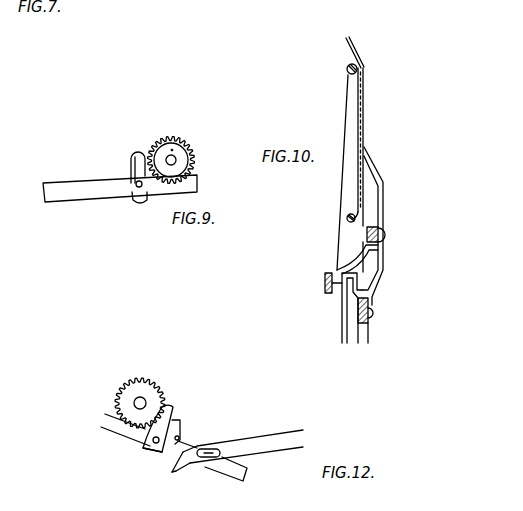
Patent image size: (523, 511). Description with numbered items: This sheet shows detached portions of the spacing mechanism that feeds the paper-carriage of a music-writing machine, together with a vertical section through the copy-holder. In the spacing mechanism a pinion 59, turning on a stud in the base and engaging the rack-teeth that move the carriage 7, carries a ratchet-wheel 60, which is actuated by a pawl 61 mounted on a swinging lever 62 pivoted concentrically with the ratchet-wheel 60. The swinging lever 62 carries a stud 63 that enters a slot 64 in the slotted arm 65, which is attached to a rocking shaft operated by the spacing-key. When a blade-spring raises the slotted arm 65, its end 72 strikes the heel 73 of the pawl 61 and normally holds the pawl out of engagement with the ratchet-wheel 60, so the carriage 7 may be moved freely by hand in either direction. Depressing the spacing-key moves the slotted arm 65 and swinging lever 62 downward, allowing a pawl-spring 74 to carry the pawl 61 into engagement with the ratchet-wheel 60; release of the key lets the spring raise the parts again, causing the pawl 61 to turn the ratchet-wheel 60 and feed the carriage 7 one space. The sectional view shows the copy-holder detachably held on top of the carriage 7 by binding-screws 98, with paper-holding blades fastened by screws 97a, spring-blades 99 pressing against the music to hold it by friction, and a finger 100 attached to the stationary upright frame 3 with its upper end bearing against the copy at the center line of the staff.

In FIG. 9, the pinion 59 is at (197, 163).
In FIG. 9, the ratchet-wheel 60 is at (187, 143).
In FIG. 12, the ratchet-wheel 60 is at (148, 388).
In FIG. 9, the pawl 61 is at (140, 157).
In FIG. 12, the pawl 61 is at (170, 407).
In FIG. 9, the swinging lever 62 is at (53, 197).
In FIG. 12, the swinging lever 62 is at (230, 470).
In FIG. 12, the stud 63 is at (201, 448).
In FIG. 12, the slot 64 is at (205, 464).
In FIG. 12, the slotted arm 65 is at (262, 440).
In FIG. 12, the end of slotted arm 72 is at (176, 467).
In FIG. 9, the heel of pawl 73 is at (140, 199).
In FIG. 12, the heel of pawl 73 is at (155, 457).
In FIG. 9, the pawl-spring 74 is at (132, 168).
In FIG. 12, the pawl-spring 74 is at (180, 420).
In FIG. 10, the screws 97a is at (352, 123).
In FIG. 10, the binding-screws 98 is at (325, 283).
In FIG. 10, the spring-blades 99 is at (357, 190).
In FIG. 10, the finger 100 is at (387, 202).
In FIG. 10, the horizontally-sliding carriage 7 is at (342, 303).
In FIG. 10, the stationary upright frame 3 is at (370, 323).